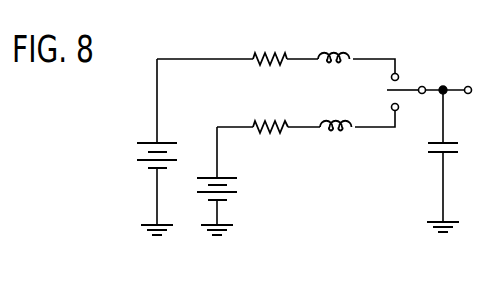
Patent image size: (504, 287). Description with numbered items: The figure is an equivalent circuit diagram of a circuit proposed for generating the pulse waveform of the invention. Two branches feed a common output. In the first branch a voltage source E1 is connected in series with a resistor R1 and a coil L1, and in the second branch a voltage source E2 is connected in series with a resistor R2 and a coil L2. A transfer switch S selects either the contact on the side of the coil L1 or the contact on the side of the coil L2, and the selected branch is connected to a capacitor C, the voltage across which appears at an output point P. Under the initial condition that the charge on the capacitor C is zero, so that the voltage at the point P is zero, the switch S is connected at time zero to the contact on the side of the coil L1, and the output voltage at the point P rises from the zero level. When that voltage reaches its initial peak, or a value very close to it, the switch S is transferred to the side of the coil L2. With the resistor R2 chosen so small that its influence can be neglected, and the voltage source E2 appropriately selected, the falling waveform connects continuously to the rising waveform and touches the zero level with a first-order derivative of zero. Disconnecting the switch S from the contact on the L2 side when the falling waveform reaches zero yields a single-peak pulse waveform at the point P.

The voltage source E1 is at (142, 189).
The voltage source E2 is at (230, 206).
The resistor R1 is at (270, 44).
The coil L1 is at (334, 42).
The resistor R2 is at (270, 111).
The coil L2 is at (336, 109).
The transfer switch S is at (406, 87).
The point P is at (455, 77).
The capacitor C is at (449, 163).